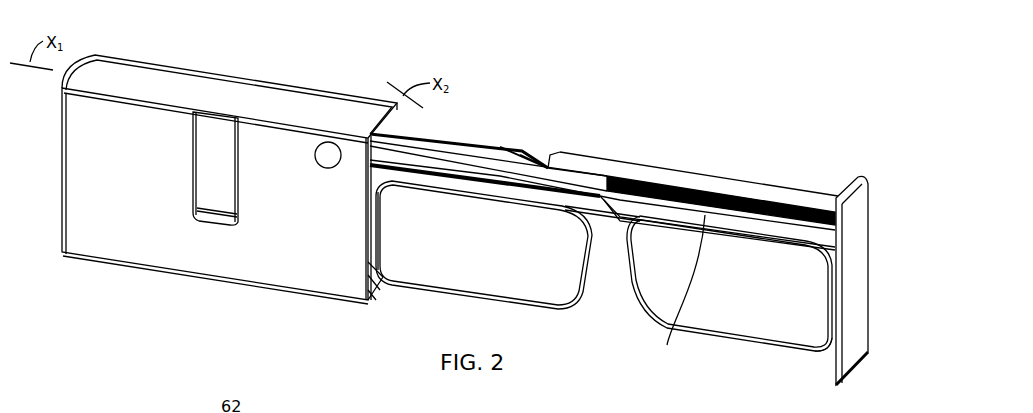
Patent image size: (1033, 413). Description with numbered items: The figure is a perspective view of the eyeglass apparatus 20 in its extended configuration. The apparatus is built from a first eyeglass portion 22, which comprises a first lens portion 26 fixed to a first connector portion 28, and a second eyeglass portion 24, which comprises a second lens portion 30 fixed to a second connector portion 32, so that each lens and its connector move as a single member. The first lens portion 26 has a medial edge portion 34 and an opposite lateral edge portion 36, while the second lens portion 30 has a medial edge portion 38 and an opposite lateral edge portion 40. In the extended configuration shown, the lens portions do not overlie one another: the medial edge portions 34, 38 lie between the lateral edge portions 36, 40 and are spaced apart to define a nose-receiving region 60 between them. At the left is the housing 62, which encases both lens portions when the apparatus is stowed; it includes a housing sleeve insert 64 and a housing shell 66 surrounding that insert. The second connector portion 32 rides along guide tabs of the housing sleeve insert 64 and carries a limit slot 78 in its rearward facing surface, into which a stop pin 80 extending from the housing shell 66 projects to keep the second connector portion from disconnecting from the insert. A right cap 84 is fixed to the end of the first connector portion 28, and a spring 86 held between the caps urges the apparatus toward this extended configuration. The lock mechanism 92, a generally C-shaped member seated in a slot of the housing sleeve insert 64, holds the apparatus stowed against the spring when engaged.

The eyeglass apparatus 20 is at (633, 106).
The first eyeglass portion 22 is at (721, 172).
The second eyeglass portion 24 is at (532, 150).
The first lens portion 26 is at (703, 338).
The first connector portion 28 is at (775, 183).
The second lens portion 30 is at (483, 303).
The second connector portion 32 is at (445, 136).
The medial edge portion 34 is at (618, 228).
The lateral edge portion 36 is at (820, 356).
The medial edge portion 38 is at (591, 278).
The lateral edge portion 40 is at (372, 215).
The nose-receiving region 60 is at (647, 178).
The housing 62 is at (167, 272).
The housing sleeve insert 64 is at (382, 282).
The housing shell 66 is at (213, 268).
The limit slot 78 is at (378, 162).
The stop pin 80 is at (327, 157).
The right cap 84 is at (860, 350).
The spring 86 is at (679, 289).
The lock mechanism 92 is at (213, 165).